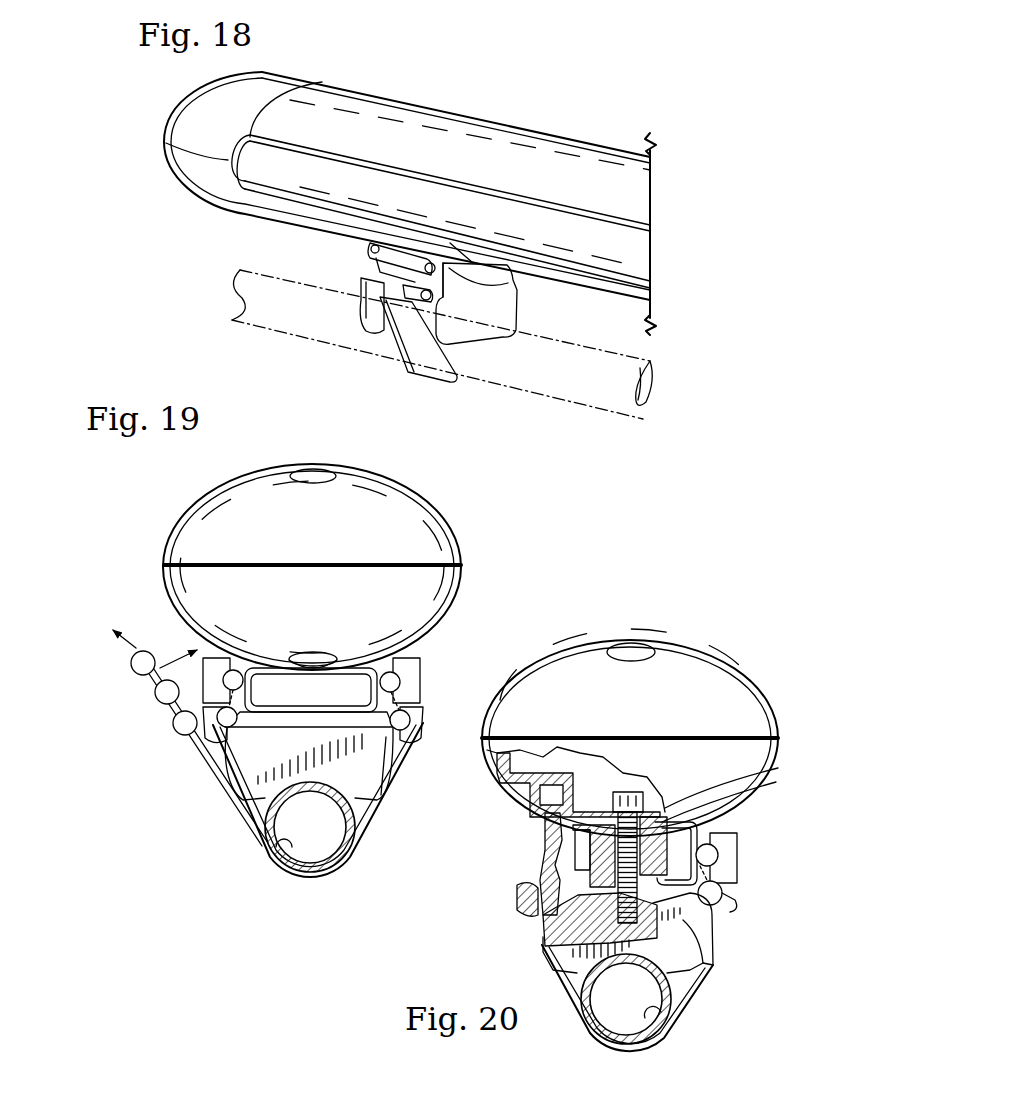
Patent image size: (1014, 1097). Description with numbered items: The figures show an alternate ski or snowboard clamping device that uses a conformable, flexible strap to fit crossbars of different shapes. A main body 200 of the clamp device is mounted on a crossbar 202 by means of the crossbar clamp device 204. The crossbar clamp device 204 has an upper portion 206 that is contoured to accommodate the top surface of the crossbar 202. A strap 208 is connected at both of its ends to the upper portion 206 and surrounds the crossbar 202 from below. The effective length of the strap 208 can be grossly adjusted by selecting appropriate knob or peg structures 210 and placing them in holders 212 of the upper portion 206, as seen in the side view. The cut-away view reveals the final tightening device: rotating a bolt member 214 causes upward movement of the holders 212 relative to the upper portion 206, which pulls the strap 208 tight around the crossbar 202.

In FIG. 18, the main body 200 is at (470, 117).
In FIG. 19, the main body 200 is at (440, 520).
In FIG. 20, the main body 200 is at (720, 662).
In FIG. 18, the crossbar 202 is at (530, 383).
In FIG. 19, the crossbar 202 is at (283, 840).
In FIG. 20, the crossbar 202 is at (667, 1033).
In FIG. 18, the crossbar clamp device 204 is at (510, 332).
In FIG. 19, the crossbar clamp device 204 is at (257, 743).
In FIG. 20, the crossbar clamp device 204 is at (631, 902).
In FIG. 18, the upper portion 206 is at (468, 318).
In FIG. 19, the upper portion 206 is at (240, 753).
In FIG. 20, the upper portion 206 is at (697, 937).
In FIG. 18, the strap 208 is at (407, 347).
In FIG. 19, the strap 208 is at (240, 820).
In FIG. 20, the strap 208 is at (690, 1000).
In FIG. 19, the knob or peg structures 210 is at (130, 663).
In FIG. 20, the knob or peg structures 210 is at (522, 883).
In FIG. 19, the holders 212 is at (213, 730).
In FIG. 20, the holders 212 is at (520, 903).
In FIG. 20, the bolt member 214 is at (720, 790).